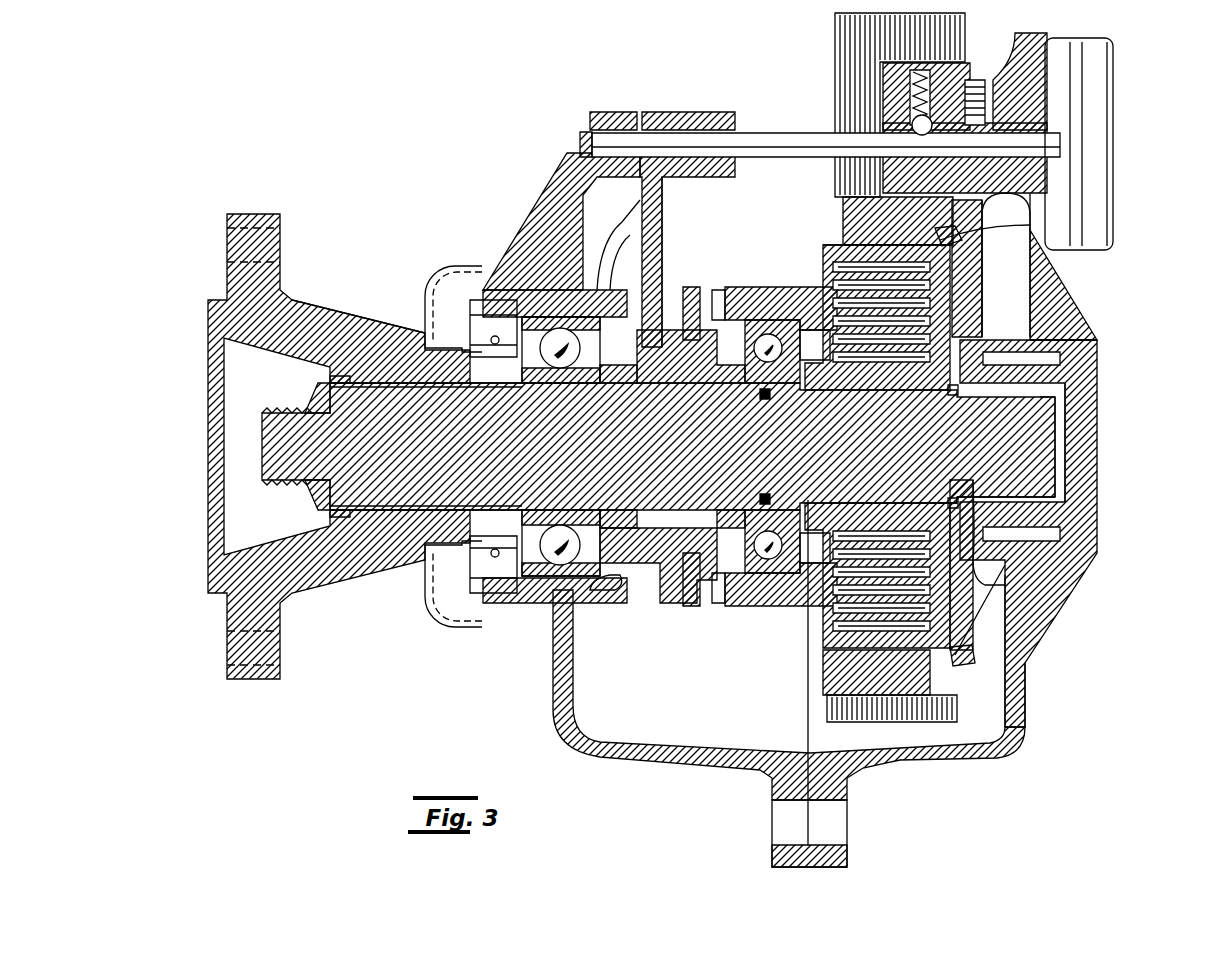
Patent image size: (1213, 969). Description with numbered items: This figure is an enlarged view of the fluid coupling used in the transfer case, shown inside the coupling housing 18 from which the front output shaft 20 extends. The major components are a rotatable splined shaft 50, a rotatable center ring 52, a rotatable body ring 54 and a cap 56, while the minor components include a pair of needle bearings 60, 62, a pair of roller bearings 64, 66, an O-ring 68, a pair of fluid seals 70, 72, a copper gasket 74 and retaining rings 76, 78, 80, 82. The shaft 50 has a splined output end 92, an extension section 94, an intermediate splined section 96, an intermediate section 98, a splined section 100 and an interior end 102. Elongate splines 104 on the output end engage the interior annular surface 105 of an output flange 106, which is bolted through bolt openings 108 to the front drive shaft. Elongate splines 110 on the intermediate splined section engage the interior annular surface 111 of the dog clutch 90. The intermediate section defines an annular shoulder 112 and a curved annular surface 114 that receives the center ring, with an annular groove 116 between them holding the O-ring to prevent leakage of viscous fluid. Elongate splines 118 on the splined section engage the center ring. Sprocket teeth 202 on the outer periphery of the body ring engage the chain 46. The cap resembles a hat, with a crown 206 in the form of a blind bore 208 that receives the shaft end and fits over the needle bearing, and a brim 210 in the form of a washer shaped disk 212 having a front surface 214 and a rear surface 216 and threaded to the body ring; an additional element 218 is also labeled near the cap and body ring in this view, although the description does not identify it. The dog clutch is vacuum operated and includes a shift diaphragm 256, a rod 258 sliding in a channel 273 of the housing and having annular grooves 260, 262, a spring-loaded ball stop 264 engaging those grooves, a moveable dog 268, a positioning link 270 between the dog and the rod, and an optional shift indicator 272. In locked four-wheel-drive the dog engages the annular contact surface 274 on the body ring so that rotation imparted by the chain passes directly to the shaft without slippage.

The coupling housing 18 is at (1010, 748).
The front output shaft 20 is at (243, 566).
The chain 46 is at (948, 35).
The splined shaft 50 is at (250, 432).
The center ring 52 is at (1017, 630).
The body ring 54 is at (833, 242).
The cap 56 is at (995, 296).
The needle bearing 60 is at (1050, 358).
The needle bearing 62 is at (1045, 388).
The roller bearing 64 is at (750, 366).
The roller bearing 66 is at (556, 368).
The O-ring 68 is at (800, 388).
The fluid seal 70 is at (836, 360).
The fluid seal 72 is at (492, 332).
The copper gasket 74 is at (948, 236).
The retaining ring 76 is at (949, 392).
The retaining ring 78 is at (735, 303).
The retaining ring 80 is at (594, 320).
The retaining ring 82 is at (522, 292).
The dog clutch 90 is at (759, 105).
The splined output end 92 is at (353, 380).
The extension section 94 is at (548, 384).
The intermediate splined section 96 is at (668, 366).
The intermediate section 98 is at (853, 502).
The splined section 100 is at (940, 502).
The interior end 102 is at (1048, 480).
The elongate splines 104 is at (390, 386).
The interior annular surface 105 is at (418, 330).
The output flange 106 is at (293, 300).
The bolt openings 108 is at (240, 252).
The elongate splines 110 is at (650, 527).
The interior annular surface 111 is at (620, 368).
The annular shoulder 112 is at (733, 503).
The curved annular surface 114 is at (800, 362).
The annular groove 116 is at (763, 397).
The elongate splines 118 is at (955, 396).
The sprocket teeth 202 is at (860, 205).
The crown 206 is at (1097, 420).
The blind bore 208 is at (1045, 465).
The brim 210 is at (975, 309).
The washer shaped disk 212 is at (990, 273).
The front surface 214 is at (1097, 340).
The rear surface 216 is at (935, 633).
The retaining line 218 is at (1030, 228).
The shift diaphragm 256 is at (1113, 115).
The rod 258 is at (745, 130).
The annular groove 260 is at (842, 133).
The annular groove 262 is at (1068, 140).
The ball stop 264 is at (897, 66).
The dog 268 is at (693, 287).
The positioning link 270 is at (668, 195).
The shift indicator 272 is at (1040, 105).
The channel 273 is at (585, 145).
The annular contact surface 274 is at (714, 292).